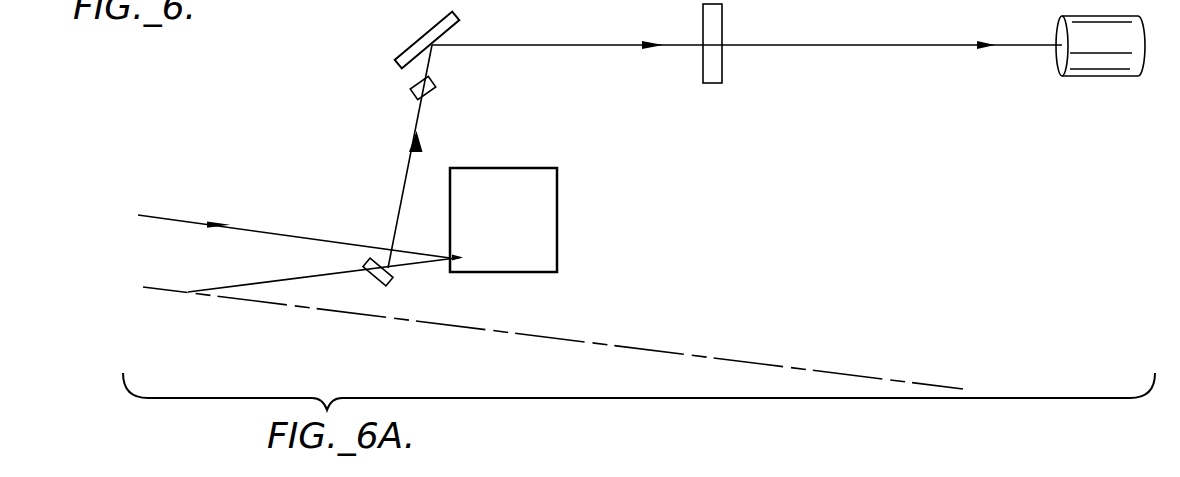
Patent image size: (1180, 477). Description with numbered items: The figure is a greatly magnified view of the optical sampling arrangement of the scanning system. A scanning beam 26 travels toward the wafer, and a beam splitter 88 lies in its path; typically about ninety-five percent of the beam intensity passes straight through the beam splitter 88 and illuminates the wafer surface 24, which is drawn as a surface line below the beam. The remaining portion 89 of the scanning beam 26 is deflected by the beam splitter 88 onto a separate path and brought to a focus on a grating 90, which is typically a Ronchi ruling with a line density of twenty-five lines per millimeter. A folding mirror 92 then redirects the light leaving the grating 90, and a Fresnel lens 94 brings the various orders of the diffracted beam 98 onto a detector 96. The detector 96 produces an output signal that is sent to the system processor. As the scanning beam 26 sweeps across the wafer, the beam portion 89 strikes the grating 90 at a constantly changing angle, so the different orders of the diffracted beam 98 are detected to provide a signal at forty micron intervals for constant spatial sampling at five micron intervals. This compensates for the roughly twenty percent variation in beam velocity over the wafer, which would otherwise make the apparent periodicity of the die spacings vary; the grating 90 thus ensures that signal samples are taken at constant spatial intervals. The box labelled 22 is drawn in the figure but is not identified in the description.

The laser light source 22 is at (557, 219).
The wafer surface 24 is at (538, 337).
The scanning beam 26 is at (305, 235).
The beam splitter 88 is at (383, 285).
The beam portion 89 is at (407, 164).
The grating 90 is at (437, 88).
The folding mirror 92 is at (407, 48).
The Fresnel lens 94 is at (712, 83).
The detector 96 is at (1107, 77).
The diffracted beam 98 is at (562, 46).